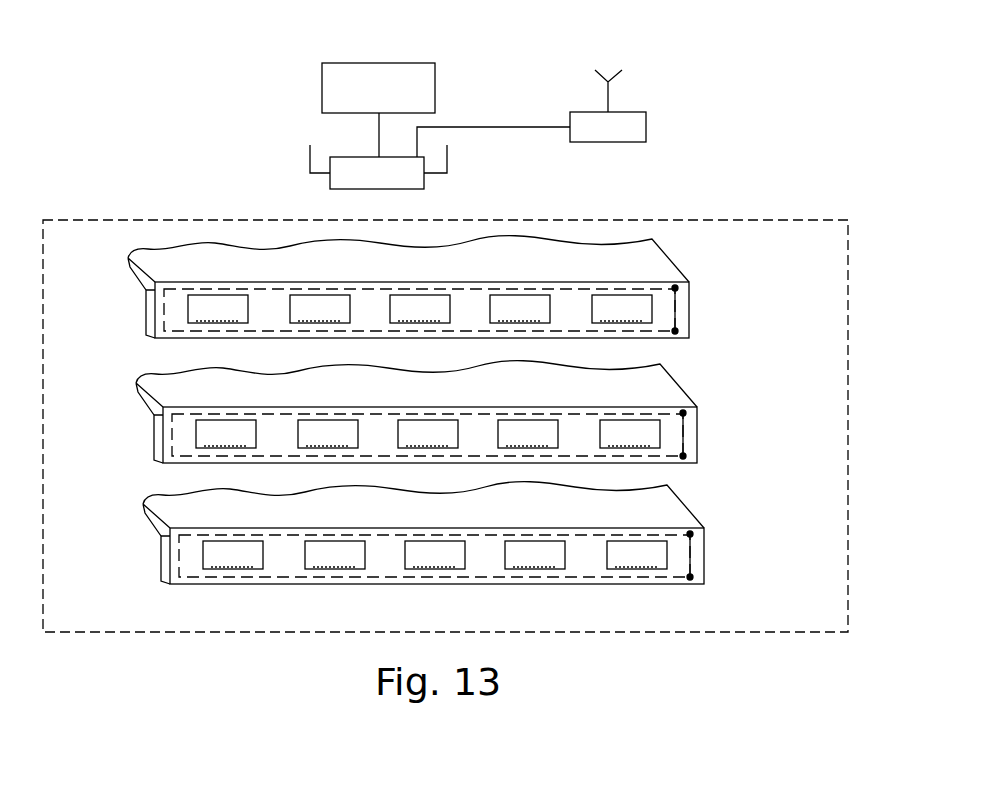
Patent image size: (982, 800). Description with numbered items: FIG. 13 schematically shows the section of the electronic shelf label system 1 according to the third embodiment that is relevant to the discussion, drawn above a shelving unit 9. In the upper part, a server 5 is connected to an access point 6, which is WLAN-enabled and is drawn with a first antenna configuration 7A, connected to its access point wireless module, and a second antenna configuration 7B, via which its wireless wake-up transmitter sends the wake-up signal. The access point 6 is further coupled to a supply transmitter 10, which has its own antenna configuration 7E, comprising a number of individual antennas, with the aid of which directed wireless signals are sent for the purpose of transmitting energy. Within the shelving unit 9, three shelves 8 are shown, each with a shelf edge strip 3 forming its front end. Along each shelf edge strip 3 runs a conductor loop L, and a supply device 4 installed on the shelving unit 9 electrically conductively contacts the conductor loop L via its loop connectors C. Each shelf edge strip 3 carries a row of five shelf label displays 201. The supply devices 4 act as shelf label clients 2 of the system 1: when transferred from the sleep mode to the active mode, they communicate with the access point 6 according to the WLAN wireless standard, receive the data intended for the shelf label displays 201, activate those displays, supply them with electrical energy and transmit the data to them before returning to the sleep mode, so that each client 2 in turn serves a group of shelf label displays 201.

The electronic shelf label system 1 is at (112, 110).
The shelf label client 2 is at (446, 424).
The shelf edge strip 3 is at (151, 318).
The supply device 4 is at (691, 305).
The server 5 is at (430, 76).
The access point 6 is at (358, 167).
The first antenna configuration 7A is at (447, 159).
The second antenna configuration 7B is at (310, 158).
The antenna configuration 7E is at (612, 97).
The shelf 8 is at (146, 290).
The shelving unit 9 is at (92, 212).
The supply transmitter 10 is at (636, 127).
The shelf label display 201 is at (427, 432).
The conductor loop L is at (639, 289).
The loop connector C is at (728, 354).